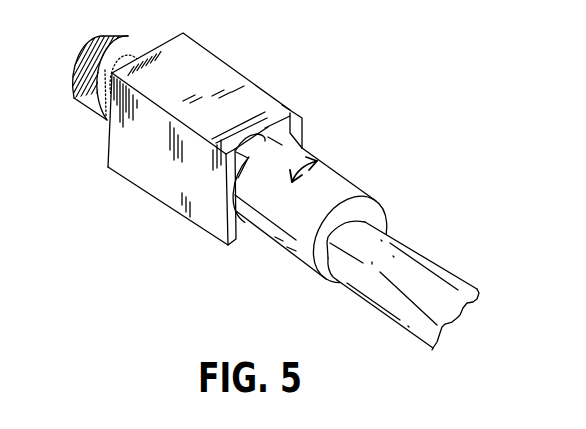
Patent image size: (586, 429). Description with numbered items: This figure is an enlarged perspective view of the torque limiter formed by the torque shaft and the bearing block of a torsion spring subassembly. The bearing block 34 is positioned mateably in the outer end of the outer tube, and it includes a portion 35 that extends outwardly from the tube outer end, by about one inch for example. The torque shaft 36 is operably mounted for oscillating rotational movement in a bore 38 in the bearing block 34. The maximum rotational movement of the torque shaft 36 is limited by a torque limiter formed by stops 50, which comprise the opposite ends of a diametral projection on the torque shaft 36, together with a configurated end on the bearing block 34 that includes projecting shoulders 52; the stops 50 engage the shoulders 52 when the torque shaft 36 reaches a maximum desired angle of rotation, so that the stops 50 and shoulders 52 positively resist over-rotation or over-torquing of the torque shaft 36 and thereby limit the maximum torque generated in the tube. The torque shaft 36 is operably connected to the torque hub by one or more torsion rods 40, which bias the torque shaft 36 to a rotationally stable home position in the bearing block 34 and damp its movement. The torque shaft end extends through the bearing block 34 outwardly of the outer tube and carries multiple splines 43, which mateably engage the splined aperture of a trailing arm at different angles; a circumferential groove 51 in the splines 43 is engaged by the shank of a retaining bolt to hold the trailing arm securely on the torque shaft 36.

The bearing block 34 is at (250, 62).
The portion of bearing block 35 is at (106, 118).
The torque shaft 36 is at (341, 174).
The bore 38 is at (284, 104).
The torsion rods 40 is at (426, 249).
The splines 43 is at (121, 34).
The stops 50 is at (334, 143).
The circumferential groove 51 is at (85, 98).
The projecting shoulders 52 is at (226, 176).